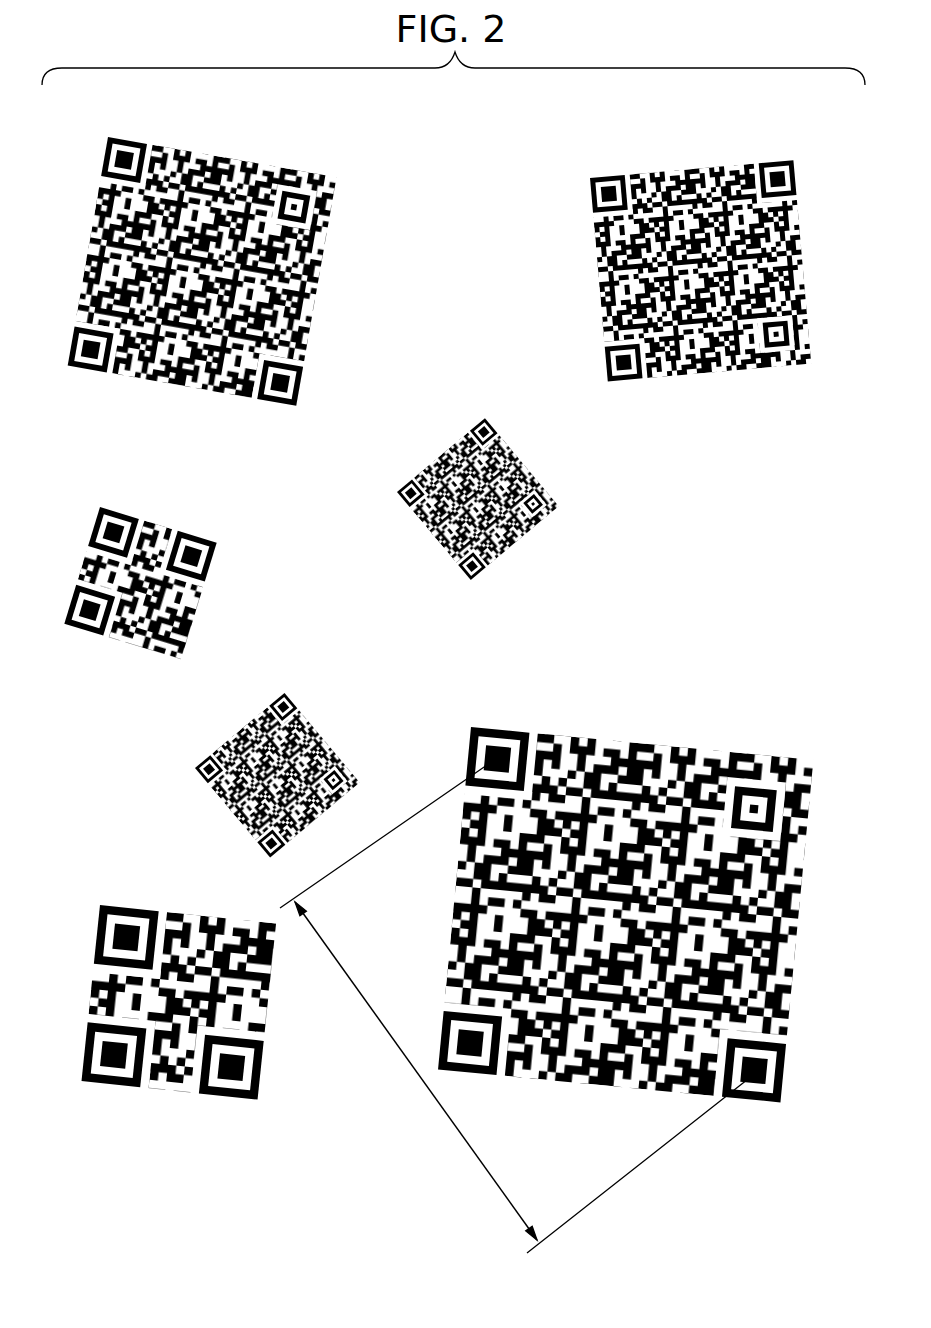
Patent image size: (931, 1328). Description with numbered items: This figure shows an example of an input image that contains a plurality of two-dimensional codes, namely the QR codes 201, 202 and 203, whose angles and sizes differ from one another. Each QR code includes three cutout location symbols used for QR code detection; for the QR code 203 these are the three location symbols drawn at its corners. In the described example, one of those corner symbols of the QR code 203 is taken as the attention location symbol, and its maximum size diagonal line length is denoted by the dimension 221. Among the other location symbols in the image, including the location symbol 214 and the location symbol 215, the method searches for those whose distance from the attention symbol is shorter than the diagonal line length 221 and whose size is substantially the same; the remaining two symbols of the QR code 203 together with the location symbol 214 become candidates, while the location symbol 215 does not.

The QR code 201 is at (298, 168).
The QR code 202 is at (703, 168).
The QR code 203 is at (641, 911).
The location symbol 214 is at (227, 1093).
The location symbol 215 is at (284, 693).
The maximum size diagonal line length 221 is at (437, 1097).